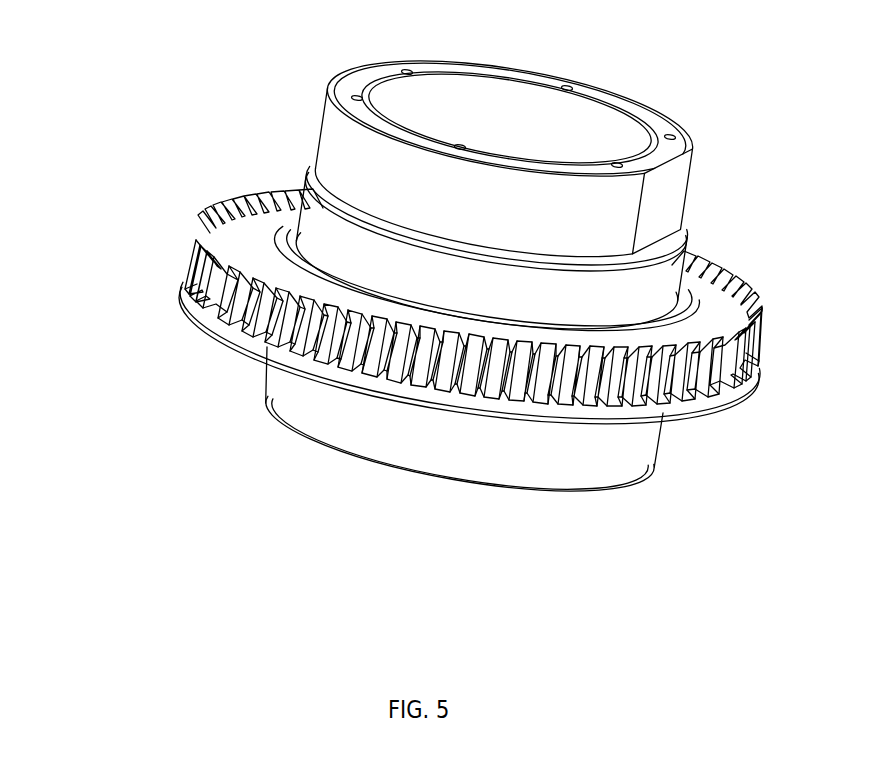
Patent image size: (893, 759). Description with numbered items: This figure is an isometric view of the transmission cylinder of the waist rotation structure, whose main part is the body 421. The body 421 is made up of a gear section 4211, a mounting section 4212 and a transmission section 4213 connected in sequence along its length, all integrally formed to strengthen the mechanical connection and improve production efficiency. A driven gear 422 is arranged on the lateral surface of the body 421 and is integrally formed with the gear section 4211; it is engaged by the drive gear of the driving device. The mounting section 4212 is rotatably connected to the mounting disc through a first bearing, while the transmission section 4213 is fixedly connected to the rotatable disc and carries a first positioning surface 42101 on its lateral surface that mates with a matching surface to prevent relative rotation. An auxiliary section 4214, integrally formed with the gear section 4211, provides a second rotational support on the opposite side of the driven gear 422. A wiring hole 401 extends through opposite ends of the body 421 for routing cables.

The wiring hole 401 is at (527, 100).
The first positioning surface 42101 is at (677, 197).
The body 421 is at (105, 83).
The gear section 4211 is at (290, 228).
The mounting section 4212 is at (300, 200).
The transmission section 4213 is at (452, 142).
The auxiliary section 4214 is at (280, 383).
The driven gear 422 is at (420, 350).